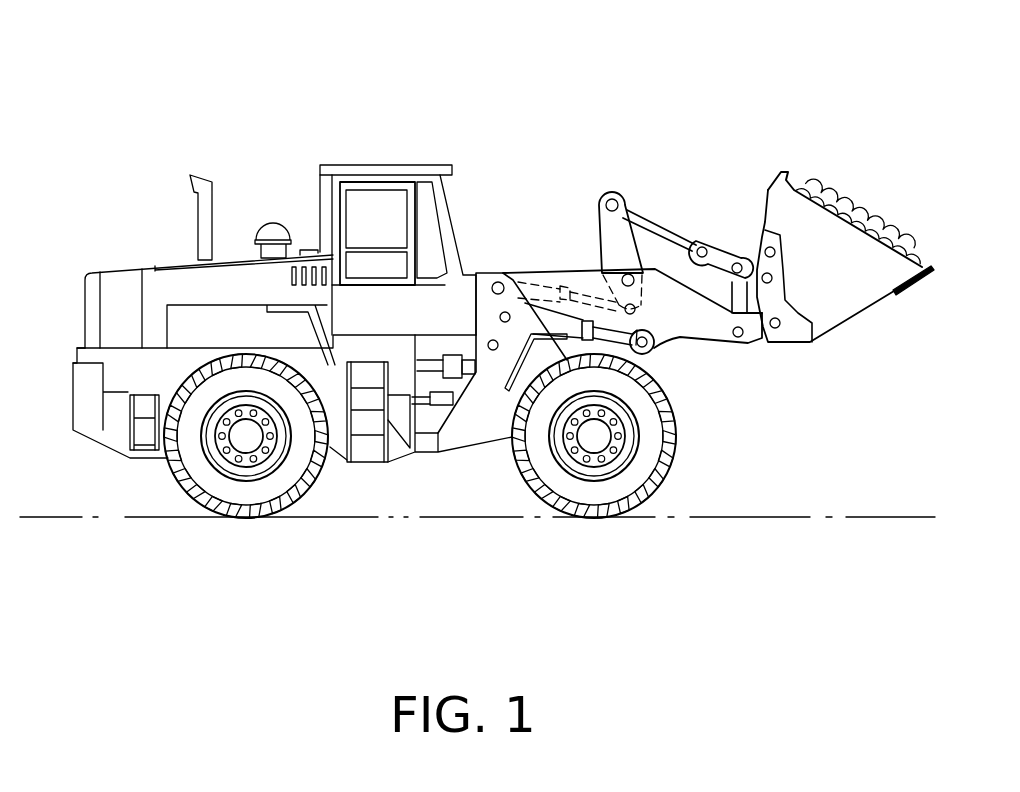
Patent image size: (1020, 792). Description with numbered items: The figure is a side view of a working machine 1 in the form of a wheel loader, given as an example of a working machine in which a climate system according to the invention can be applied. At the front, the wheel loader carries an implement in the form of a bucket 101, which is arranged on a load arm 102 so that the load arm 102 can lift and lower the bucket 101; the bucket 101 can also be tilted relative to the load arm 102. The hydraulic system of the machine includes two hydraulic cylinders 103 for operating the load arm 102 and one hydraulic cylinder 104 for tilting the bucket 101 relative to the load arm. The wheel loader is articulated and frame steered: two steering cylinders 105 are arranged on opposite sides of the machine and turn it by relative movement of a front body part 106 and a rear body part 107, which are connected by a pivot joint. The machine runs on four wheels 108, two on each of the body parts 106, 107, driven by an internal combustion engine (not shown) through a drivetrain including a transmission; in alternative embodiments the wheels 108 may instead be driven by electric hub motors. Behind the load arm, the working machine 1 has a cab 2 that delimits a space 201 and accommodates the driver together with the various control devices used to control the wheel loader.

The working machine 1 is at (352, 125).
The cab 2 is at (452, 226).
The space 201 is at (382, 220).
The bucket 101 is at (840, 292).
The load arm 102 is at (753, 125).
The hydraulic cylinders 103 is at (618, 342).
The hydraulic cylinder 104 is at (581, 297).
The steering cylinders 105 is at (465, 378).
The front body part 106 is at (463, 433).
The rear body part 107 is at (118, 435).
The wheels 108 is at (255, 492).